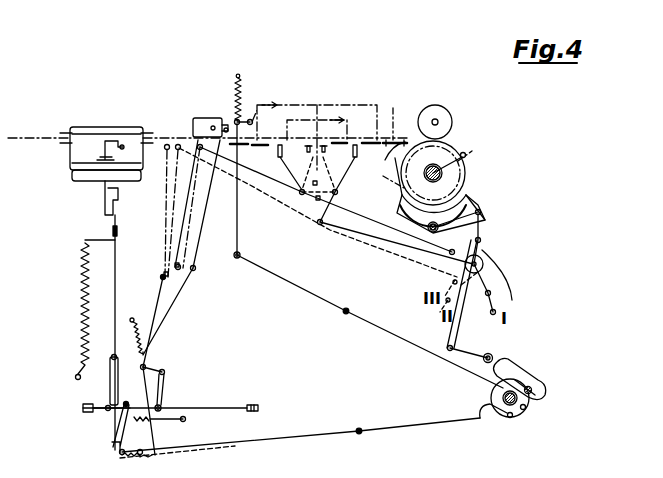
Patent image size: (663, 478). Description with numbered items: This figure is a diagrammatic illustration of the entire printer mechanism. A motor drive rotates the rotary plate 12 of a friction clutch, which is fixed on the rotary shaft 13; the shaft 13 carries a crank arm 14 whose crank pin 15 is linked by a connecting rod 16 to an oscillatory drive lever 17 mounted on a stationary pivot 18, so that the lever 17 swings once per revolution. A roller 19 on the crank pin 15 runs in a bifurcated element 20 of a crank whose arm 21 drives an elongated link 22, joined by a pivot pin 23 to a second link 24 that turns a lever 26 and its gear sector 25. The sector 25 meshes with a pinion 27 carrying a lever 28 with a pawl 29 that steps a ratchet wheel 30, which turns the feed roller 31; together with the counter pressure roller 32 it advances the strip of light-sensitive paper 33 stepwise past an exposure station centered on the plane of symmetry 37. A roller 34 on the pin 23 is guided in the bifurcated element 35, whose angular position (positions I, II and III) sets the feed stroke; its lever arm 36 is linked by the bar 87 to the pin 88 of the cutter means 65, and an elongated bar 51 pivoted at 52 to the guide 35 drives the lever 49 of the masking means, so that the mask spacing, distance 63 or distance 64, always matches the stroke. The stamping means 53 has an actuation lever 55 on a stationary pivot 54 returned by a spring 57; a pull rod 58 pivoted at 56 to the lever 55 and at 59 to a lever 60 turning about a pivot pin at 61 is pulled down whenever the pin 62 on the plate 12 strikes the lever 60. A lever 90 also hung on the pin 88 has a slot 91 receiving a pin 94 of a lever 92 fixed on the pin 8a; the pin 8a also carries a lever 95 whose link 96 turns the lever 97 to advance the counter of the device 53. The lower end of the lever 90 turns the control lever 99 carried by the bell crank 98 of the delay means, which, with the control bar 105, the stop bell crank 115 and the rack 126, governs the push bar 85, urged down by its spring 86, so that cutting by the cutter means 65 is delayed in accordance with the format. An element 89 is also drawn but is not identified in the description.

The pin 8a is at (176, 265).
The rotary plate 12 is at (497, 388).
The rotary shaft 13 is at (480, 420).
The crank arm 14 is at (520, 388).
The crank pin 15 is at (531, 390).
The connecting rod 16 is at (511, 418).
The oscillatory drive lever 17 is at (422, 428).
The stationary pivot 18 is at (358, 434).
The roller 19 is at (540, 395).
The bifurcated element 20 is at (499, 356).
The crank arm 21 is at (450, 352).
The elongated link 22 is at (455, 328).
The pivot pin 23 is at (490, 283).
The second link 24 is at (484, 221).
The gear sector 25 is at (486, 192).
The lever 26 is at (485, 208).
The pinion 27 is at (353, 170).
The lever 28 is at (468, 150).
The pawl 29 is at (476, 158).
The ratchet wheel 30 is at (447, 142).
The feed roller 31 is at (382, 176).
The counter pressure roller 32 is at (436, 104).
The strip of light-sensitive paper 33 is at (397, 116).
The roller 34 is at (484, 267).
The bifurcated guide element 35 is at (486, 268).
The lever arm 36 is at (500, 296).
The central plane of symmetry 37 is at (347, 148).
The lever 49 is at (347, 180).
The elongated bar 51 is at (400, 245).
The pivotal connection 52 is at (450, 256).
The stamping means 53 is at (196, 118).
The stationary pivot 54 is at (256, 118).
The actuation lever 55 is at (247, 117).
The pivotal connection 56 is at (235, 119).
The spring 57 is at (239, 74).
The pull rod 58 is at (239, 207).
The pivotal connection 59 is at (243, 255).
The lever 60 is at (295, 282).
The pivot pin 61 is at (344, 315).
The pin 62 is at (528, 410).
The masking distance 63 is at (316, 104).
The exposure station width 64 is at (331, 119).
The cutter means 65 is at (95, 126).
The push bar 85 is at (115, 310).
The spring 86 is at (82, 267).
The elongated bar 87 is at (290, 196).
The pin 88 is at (167, 142).
The pivot 89 is at (479, 318).
The lever 90 is at (183, 203).
The longitudinal slot 91 is at (160, 281).
The lever 92 is at (183, 283).
The pin 94 is at (160, 276).
The second lever 95 is at (196, 271).
The elongated link 96 is at (192, 228).
The lever 97 is at (214, 125).
The bell crank 98 is at (165, 392).
The control lever 99 is at (157, 340).
The control bar 105 is at (210, 408).
The bell crank stop lever 115 is at (90, 406).
The rack 126 is at (176, 422).